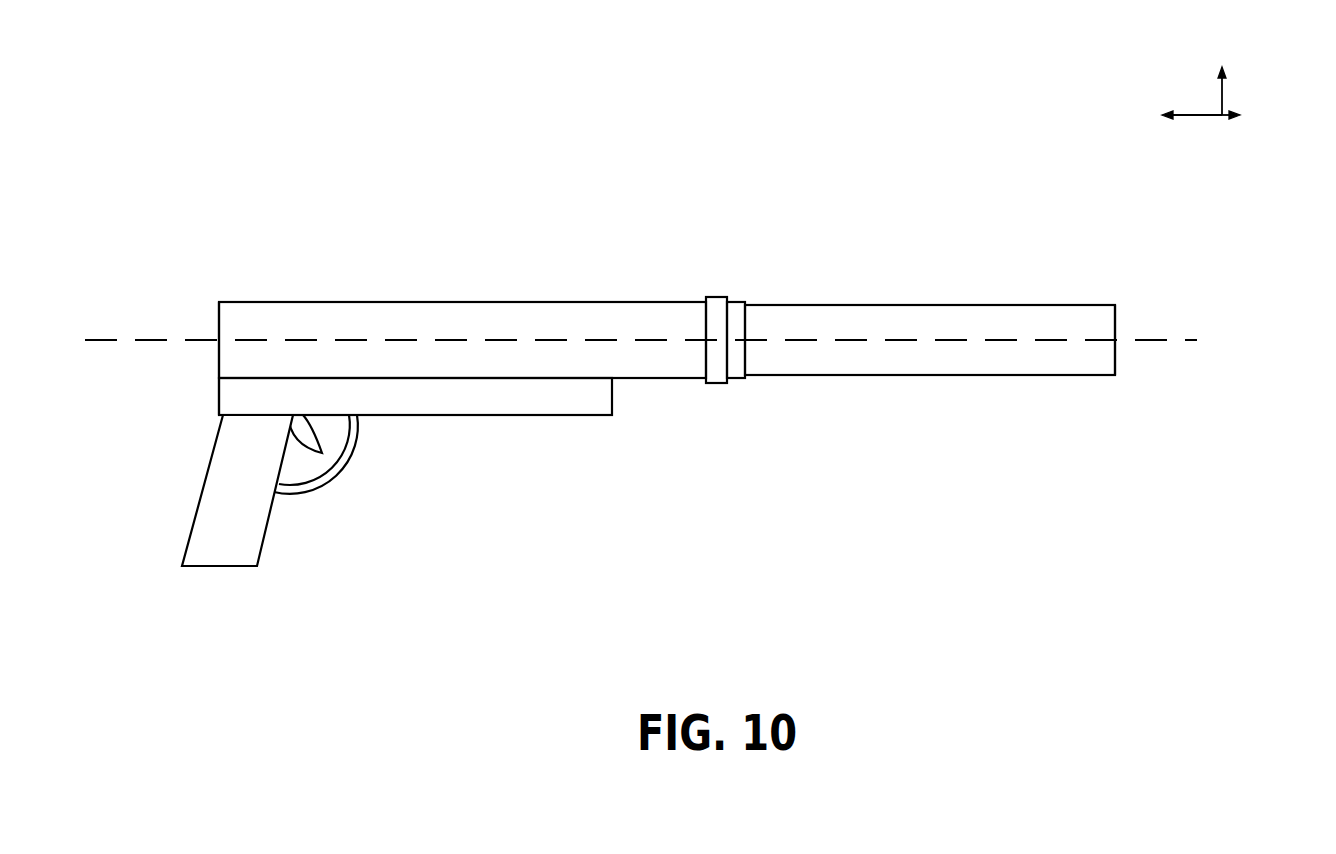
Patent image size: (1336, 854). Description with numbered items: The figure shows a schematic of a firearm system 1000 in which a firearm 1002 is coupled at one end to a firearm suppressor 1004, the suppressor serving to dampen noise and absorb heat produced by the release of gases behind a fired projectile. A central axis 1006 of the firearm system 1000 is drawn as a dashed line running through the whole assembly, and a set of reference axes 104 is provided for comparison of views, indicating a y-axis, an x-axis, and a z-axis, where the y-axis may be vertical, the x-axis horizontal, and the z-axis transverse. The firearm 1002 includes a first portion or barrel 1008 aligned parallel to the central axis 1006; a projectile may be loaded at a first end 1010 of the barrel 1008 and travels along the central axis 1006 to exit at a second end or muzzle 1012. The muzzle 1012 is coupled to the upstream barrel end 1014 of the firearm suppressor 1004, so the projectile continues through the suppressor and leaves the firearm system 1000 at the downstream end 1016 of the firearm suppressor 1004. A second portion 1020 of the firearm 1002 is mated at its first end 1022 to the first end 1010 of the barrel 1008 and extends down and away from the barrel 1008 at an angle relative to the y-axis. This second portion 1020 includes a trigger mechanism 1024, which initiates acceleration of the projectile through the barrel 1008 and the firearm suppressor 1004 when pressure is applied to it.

The set of reference axes 104 is at (1256, 76).
The firearm system 1000 is at (255, 118).
The firearm 1002 is at (293, 268).
The firearm suppressor 1004 is at (888, 232).
The central axis 1006 is at (105, 339).
The barrel 1008 is at (386, 302).
The first end of the barrel 1010 is at (219, 310).
The muzzle 1012 is at (706, 297).
The barrel end of the firearm suppressor 1014 is at (727, 297).
The downstream end of the firearm suppressor 1016 is at (1110, 298).
The second portion of the firearm 1020 is at (210, 492).
The first end of the second portion 1022 is at (222, 417).
The trigger mechanism 1024 is at (298, 452).